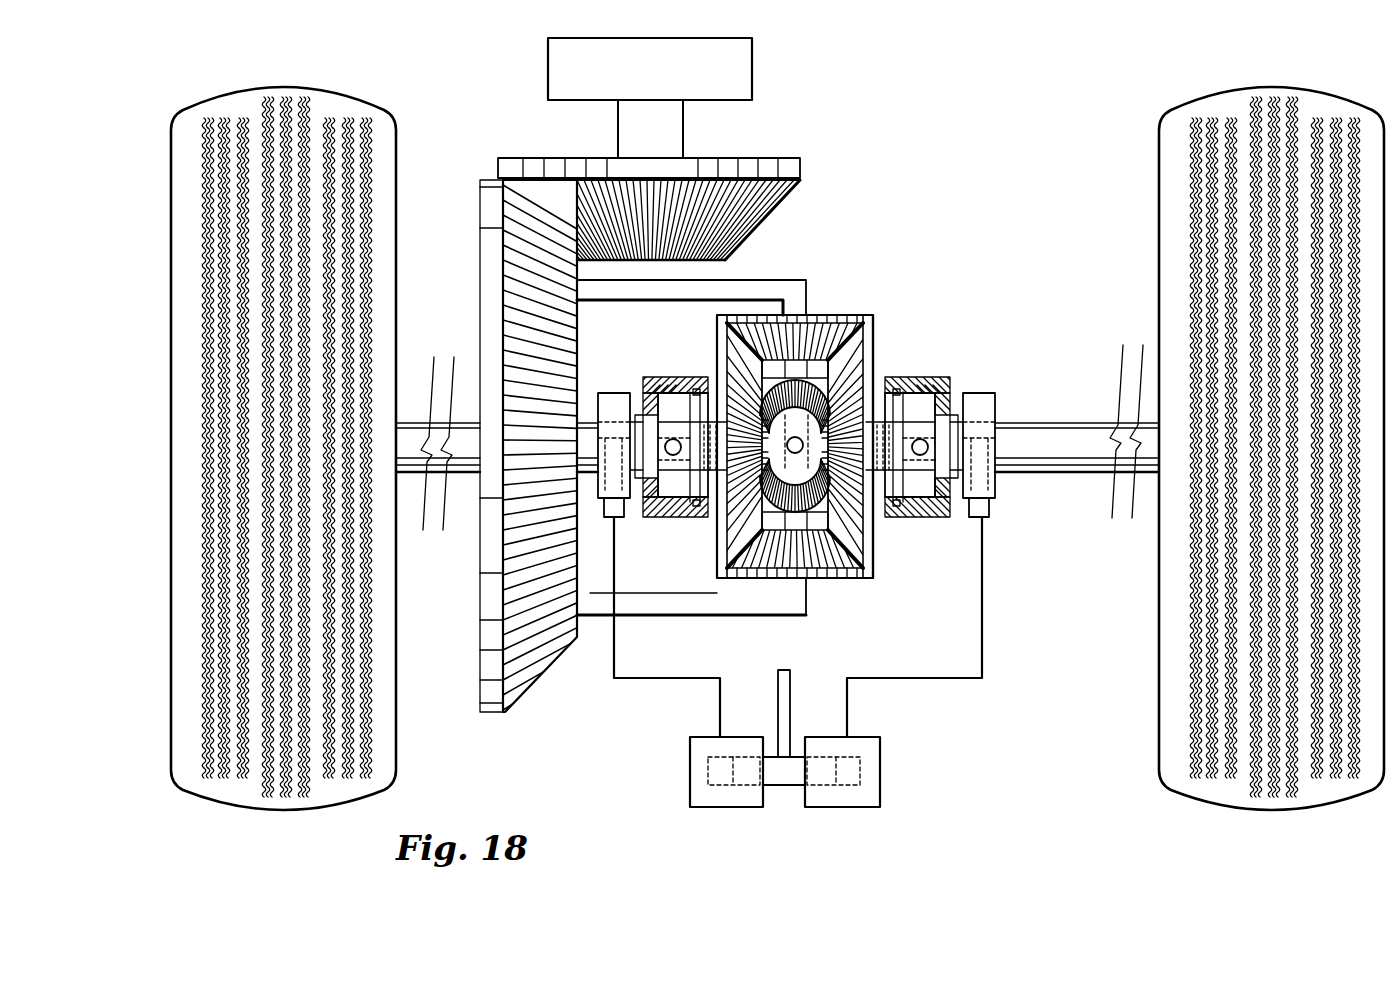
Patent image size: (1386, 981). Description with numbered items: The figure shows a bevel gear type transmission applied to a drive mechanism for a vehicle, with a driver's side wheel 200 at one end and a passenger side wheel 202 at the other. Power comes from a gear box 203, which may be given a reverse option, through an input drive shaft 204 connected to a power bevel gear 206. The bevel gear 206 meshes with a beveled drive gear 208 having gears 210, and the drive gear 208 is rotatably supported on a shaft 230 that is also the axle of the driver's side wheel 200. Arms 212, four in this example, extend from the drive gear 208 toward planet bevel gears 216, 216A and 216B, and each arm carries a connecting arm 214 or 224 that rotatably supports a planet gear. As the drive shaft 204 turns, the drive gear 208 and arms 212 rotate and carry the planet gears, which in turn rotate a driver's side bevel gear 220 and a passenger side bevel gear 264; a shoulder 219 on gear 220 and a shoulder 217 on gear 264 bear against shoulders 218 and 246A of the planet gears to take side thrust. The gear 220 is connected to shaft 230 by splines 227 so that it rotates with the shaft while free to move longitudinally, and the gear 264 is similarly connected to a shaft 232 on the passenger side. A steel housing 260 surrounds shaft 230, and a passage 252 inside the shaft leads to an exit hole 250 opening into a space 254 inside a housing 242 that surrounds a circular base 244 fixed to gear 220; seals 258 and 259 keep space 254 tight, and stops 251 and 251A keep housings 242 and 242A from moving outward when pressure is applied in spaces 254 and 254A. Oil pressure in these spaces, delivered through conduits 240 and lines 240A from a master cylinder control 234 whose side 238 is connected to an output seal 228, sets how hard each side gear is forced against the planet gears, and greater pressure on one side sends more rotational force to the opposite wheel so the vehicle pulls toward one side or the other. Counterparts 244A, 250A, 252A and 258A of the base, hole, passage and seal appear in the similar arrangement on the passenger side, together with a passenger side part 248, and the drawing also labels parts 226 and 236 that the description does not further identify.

The driver's side wheel 200 is at (355, 727).
The passenger side wheel 202 is at (1195, 765).
The gear box 203 is at (740, 72).
The input drive shaft 204 is at (667, 128).
The power bevel gear 206 is at (790, 197).
The beveled drive gear 208 is at (520, 546).
The gears 210 is at (547, 226).
The arms 212 is at (720, 670).
The connecting arm 214 is at (818, 320).
The planet bevel gear 216 is at (815, 318).
The planet bevel gear 216A is at (882, 355).
The planet bevel gear 216B is at (833, 572).
The shoulder 217 is at (880, 318).
The shoulder 218 is at (843, 325).
The shoulder 219 is at (708, 262).
The driver's side bevel gear 220 is at (795, 372).
The connecting arm 224 is at (808, 570).
The lower bevel pinion 226 is at (770, 560).
The splines 227 is at (740, 607).
The output seal 228 is at (1000, 432).
The shaft 230 is at (413, 430).
The shaft 232 is at (1109, 412).
The master cylinder control 234 is at (780, 806).
The left solenoid 236 is at (722, 772).
The side of master cylinder control 238 is at (850, 772).
The conduits 240 is at (640, 678).
The lines 240A is at (952, 682).
The housing 242 is at (650, 387).
The housing 242A is at (918, 376).
The circular base 244 is at (740, 330).
The right spline 244A is at (943, 373).
The shoulder 246A is at (850, 580).
The right sensor 248 is at (985, 512).
The exit hole 250 is at (676, 438).
The right hub 250A is at (985, 498).
The stop 251 is at (614, 583).
The stop 251A is at (966, 405).
The passage 252 is at (652, 533).
The right pin 252A is at (925, 450).
The space 254 is at (700, 515).
The space 254A is at (960, 398).
The seal 258 is at (715, 520).
The right hub flange 258A is at (935, 515).
The seal 259 is at (650, 407).
The steel housing 260 is at (623, 407).
The passenger side bevel gear 264 is at (872, 548).